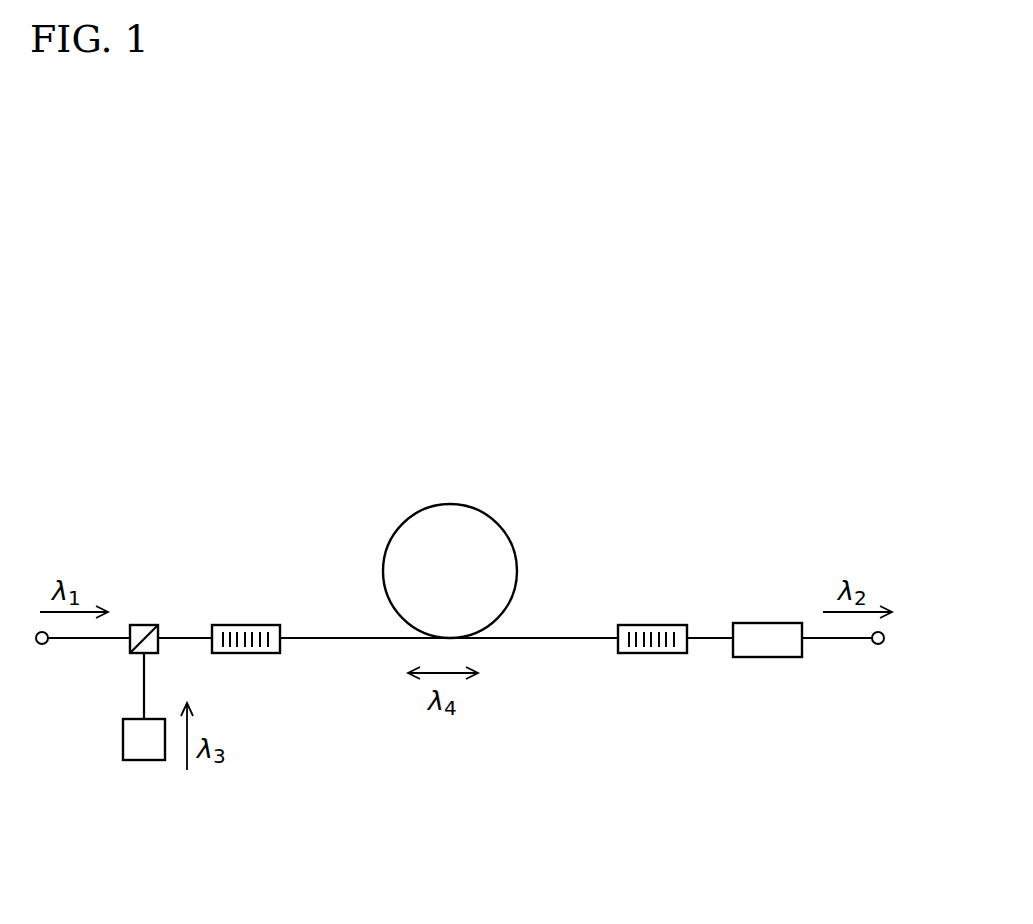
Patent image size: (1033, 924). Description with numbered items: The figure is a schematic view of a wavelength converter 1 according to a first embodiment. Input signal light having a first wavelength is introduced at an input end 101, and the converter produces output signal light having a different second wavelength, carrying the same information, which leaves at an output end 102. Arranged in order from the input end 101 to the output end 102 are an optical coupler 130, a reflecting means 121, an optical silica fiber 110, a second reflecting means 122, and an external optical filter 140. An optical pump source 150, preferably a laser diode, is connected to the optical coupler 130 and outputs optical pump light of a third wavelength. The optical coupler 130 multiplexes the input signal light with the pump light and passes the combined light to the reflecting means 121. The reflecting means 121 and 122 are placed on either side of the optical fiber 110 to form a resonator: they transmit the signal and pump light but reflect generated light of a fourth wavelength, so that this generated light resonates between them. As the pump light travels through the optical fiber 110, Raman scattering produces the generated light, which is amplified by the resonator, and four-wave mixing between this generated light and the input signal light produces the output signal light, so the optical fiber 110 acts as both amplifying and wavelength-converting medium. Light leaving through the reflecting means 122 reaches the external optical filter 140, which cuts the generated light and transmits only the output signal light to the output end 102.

The wavelength converter 1 is at (346, 466).
The input end 101 is at (40, 645).
The output end 102 is at (877, 645).
The optical silica fiber 110 is at (483, 508).
The reflecting means 121 is at (250, 623).
The reflecting means 122 is at (662, 623).
The optical coupler 130 is at (143, 623).
The external optical filter 140 is at (772, 622).
The optical pump source 150 is at (143, 761).